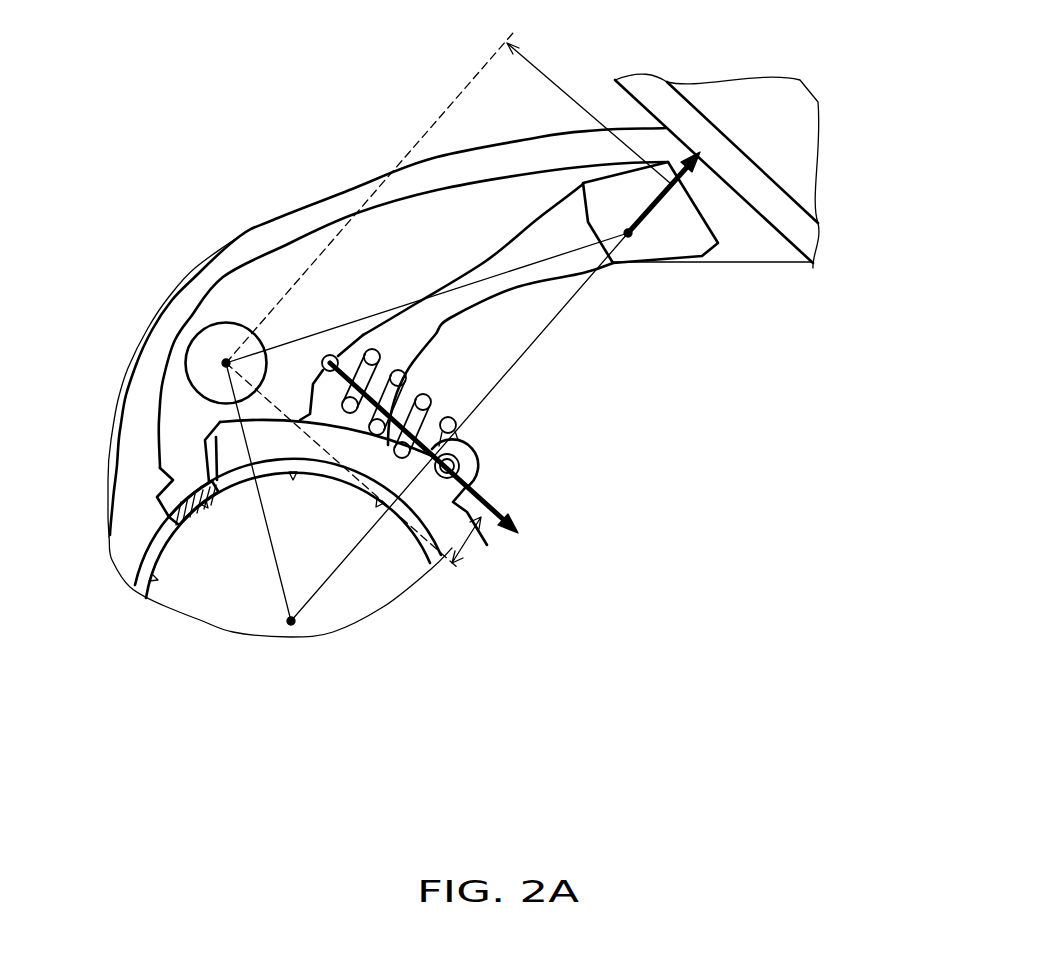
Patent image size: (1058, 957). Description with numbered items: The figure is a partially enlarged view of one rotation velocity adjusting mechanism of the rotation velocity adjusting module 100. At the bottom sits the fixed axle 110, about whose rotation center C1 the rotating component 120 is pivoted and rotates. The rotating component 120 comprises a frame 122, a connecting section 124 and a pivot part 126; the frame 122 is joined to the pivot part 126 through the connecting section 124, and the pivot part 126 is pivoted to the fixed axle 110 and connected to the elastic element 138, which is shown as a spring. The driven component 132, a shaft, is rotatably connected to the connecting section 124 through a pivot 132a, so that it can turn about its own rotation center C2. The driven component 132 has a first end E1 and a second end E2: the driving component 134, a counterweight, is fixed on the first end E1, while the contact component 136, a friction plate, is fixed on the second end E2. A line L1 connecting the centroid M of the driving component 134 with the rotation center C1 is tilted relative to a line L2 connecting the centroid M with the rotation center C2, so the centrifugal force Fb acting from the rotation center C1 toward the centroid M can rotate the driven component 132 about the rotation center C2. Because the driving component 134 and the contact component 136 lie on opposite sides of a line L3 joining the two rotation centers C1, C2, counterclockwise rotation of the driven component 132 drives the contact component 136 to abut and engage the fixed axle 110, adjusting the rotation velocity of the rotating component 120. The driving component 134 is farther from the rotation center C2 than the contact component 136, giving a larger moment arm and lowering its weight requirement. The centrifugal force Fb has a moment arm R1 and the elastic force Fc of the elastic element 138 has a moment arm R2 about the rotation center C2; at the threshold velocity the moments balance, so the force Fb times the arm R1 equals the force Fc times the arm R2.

The rotation velocity adjusting module 100 is at (866, 708).
The fixed axle 110 is at (338, 597).
The rotating component 120 is at (768, 171).
The frame 122 is at (800, 128).
The connecting section 124 is at (345, 200).
The pivot part 126 is at (280, 447).
The driven component 132 is at (440, 212).
The pivot 132a is at (223, 337).
The driving component 134 is at (605, 218).
The contact component 136 is at (190, 513).
The elastic element 138 is at (431, 403).
The rotation center of the rotating component C1 is at (291, 628).
The rotation center of the driven component C2 is at (196, 356).
The first end E1 is at (707, 230).
The second end E2 is at (167, 497).
The line connecting the centroid and rotation center C1 L1 is at (497, 383).
The line connecting the centroid and rotation center C2 L2 is at (525, 267).
The line connecting the rotation centers L3 is at (275, 580).
The centroid of the driving component M is at (630, 238).
The moment arm of the centrifugal force R1 is at (552, 82).
The moment arm of the elastic force R2 is at (483, 535).
The centrifugal force Fb is at (682, 175).
The elastic force Fc is at (487, 493).